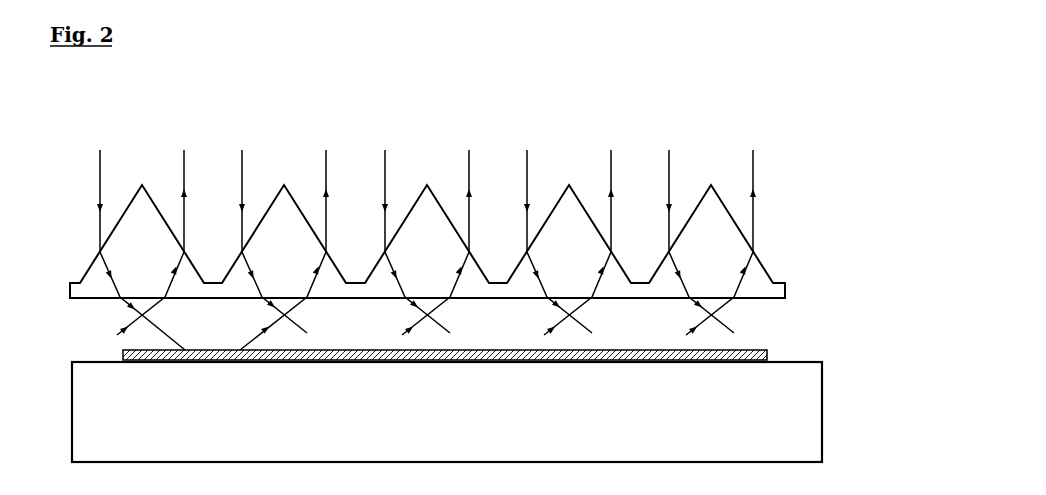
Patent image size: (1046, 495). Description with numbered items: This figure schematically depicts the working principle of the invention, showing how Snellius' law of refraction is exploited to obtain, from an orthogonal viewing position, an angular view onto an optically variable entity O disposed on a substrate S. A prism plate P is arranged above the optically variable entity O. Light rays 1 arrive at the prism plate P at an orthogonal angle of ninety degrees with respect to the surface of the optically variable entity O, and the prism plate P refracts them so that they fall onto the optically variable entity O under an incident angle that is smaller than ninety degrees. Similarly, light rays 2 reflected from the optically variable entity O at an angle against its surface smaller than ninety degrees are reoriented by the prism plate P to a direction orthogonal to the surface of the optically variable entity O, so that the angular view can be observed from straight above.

The light rays 1 is at (414, 237).
The light rays 2 is at (438, 237).
The prism plate P is at (760, 278).
The optically variable entity O is at (767, 350).
The substrate S is at (752, 432).